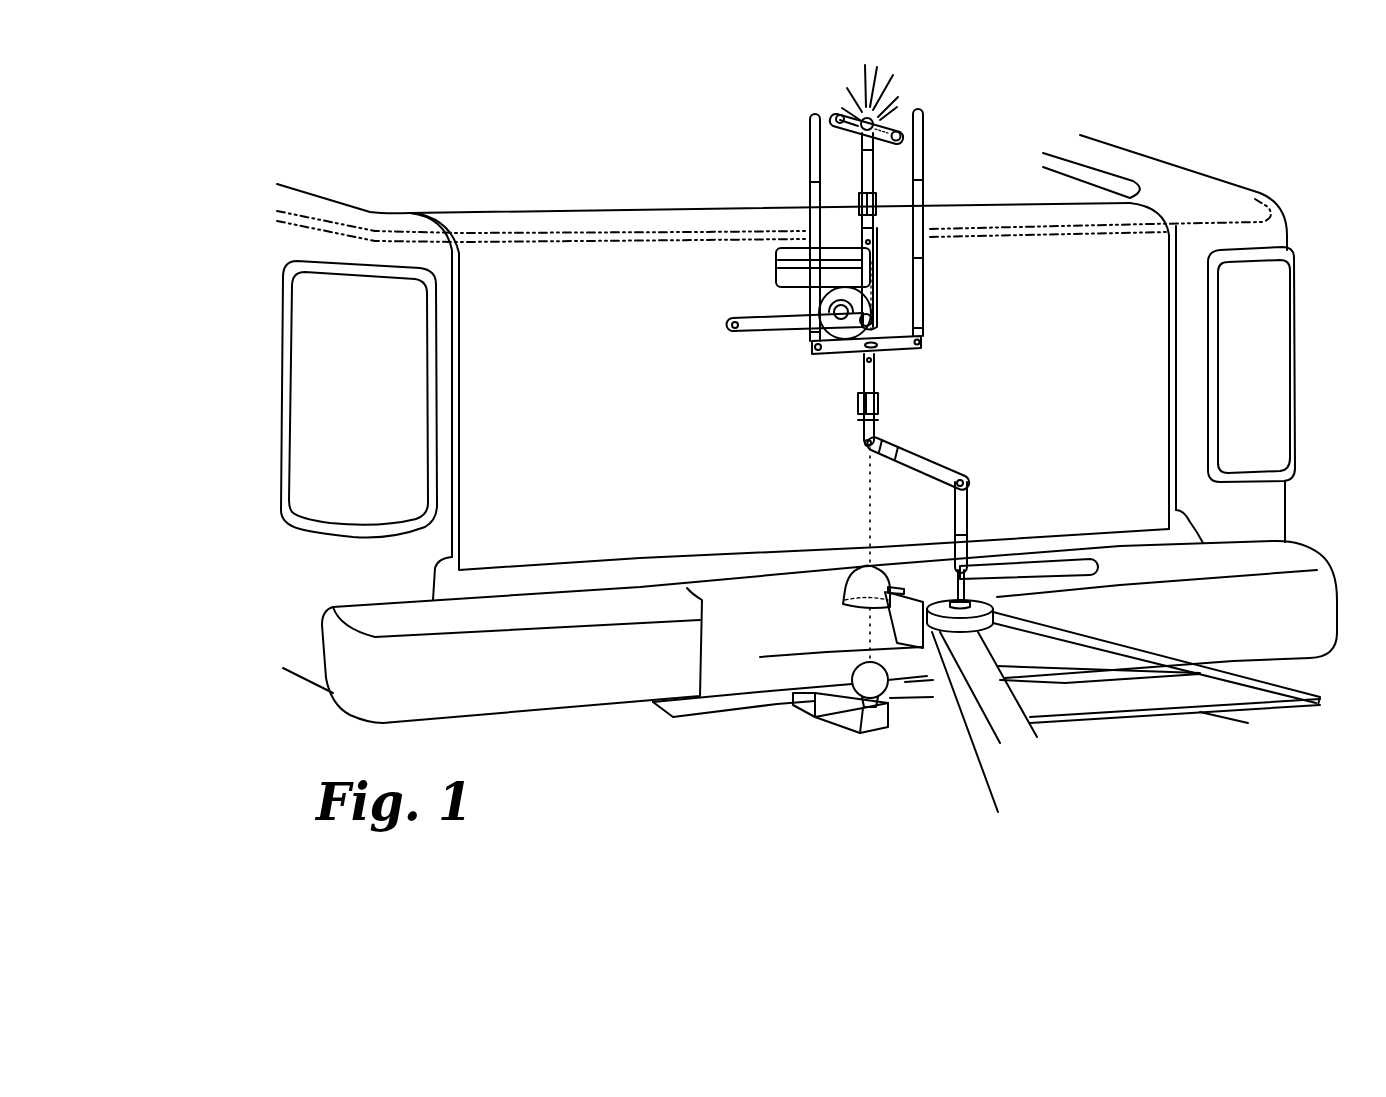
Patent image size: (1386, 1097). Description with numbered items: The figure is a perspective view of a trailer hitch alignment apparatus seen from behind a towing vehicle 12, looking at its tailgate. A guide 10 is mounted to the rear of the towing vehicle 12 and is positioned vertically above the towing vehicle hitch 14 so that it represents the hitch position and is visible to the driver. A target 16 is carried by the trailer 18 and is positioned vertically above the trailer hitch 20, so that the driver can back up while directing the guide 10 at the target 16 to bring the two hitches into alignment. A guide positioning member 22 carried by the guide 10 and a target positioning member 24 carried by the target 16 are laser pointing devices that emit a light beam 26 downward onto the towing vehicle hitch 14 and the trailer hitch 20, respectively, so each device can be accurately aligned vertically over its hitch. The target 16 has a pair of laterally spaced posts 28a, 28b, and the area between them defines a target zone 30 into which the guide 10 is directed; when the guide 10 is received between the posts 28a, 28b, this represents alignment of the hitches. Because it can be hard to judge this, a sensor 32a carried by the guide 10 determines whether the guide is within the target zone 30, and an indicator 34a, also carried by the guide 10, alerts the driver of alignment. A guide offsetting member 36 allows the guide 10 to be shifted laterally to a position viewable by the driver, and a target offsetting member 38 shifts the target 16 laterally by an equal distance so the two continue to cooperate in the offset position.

The guide 10 is at (884, 219).
The towing vehicle 12 is at (1207, 190).
The towing vehicle hitch 14 is at (860, 683).
The target 16 is at (970, 477).
The trailer 18 is at (1163, 655).
The trailer hitch 20 is at (860, 567).
The guide positioning member 22 is at (877, 203).
The target positioning member 24 is at (878, 396).
The light beam 26 is at (868, 481).
The post 28a is at (811, 122).
The post 28b is at (921, 123).
The target zone 30 is at (886, 288).
The sensor 32a is at (862, 137).
The indicator 34a is at (858, 95).
The guide offsetting member 36 is at (752, 322).
The target offsetting member 38 is at (1040, 562).